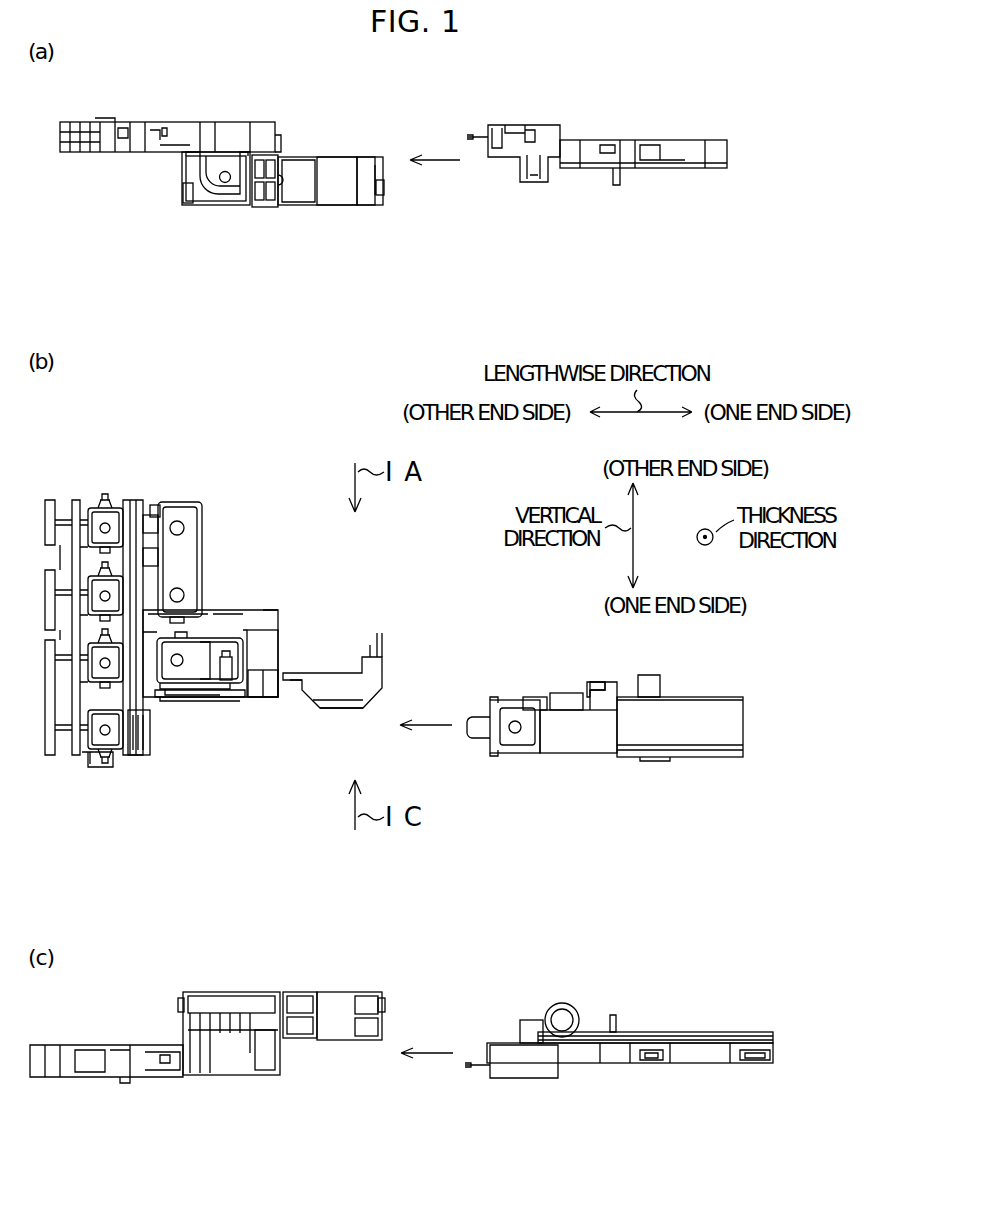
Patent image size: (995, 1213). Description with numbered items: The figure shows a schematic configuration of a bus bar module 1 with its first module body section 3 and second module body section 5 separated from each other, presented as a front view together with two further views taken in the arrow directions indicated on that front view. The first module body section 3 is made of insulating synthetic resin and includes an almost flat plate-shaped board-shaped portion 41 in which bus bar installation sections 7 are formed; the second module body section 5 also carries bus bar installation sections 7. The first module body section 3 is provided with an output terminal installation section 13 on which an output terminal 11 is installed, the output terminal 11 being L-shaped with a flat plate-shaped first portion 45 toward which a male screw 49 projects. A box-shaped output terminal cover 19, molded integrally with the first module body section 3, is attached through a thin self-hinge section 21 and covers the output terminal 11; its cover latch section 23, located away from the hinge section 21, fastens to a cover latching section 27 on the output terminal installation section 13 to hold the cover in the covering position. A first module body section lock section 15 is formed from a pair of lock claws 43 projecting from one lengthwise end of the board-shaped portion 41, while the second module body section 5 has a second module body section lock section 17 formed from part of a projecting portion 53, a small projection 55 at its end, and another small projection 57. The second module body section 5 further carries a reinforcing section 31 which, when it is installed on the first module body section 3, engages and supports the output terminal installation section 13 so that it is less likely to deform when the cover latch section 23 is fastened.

The bus bar module 1 is at (434, 582).
The first module body section 3 is at (168, 502).
The second module body section 5 is at (700, 757).
The bus bar installation section 7 is at (112, 509).
The output terminal 11 is at (218, 693).
The output terminal installation section 13 is at (210, 205).
The first module body section lock section 15 is at (219, 755).
The second module body section lock section 17 is at (471, 752).
The output terminal cover 19 is at (346, 198).
The hinge section 21 is at (282, 208).
The cover latch section 23 is at (385, 190).
The cover latching section 27 is at (182, 193).
The reinforcing section 31 is at (542, 182).
The board-shaped portion 41 is at (45, 634).
The lock claw 43 is at (234, 202).
The first portion 45 is at (200, 650).
The male screw 49 is at (225, 170).
The projecting portion 53 is at (520, 745).
The small projection 55 is at (480, 718).
The small projection 57 is at (595, 682).